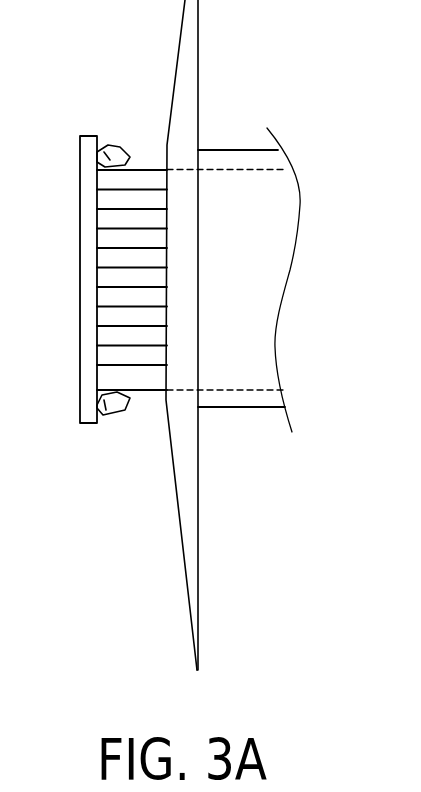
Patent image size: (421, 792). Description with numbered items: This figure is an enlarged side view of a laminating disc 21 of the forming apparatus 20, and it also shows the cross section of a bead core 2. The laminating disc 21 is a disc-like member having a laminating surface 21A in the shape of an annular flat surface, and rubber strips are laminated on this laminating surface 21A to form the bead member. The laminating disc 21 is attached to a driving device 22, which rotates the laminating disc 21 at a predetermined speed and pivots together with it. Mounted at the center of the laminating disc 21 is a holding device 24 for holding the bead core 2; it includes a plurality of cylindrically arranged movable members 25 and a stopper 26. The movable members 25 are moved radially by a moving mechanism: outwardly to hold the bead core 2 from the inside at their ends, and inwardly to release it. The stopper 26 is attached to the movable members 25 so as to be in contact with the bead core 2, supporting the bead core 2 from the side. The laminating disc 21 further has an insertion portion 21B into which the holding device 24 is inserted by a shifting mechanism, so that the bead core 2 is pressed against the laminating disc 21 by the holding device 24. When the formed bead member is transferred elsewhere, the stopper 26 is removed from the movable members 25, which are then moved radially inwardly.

The bead core 2 is at (122, 138).
The forming apparatus 20 is at (233, 264).
The laminating disc 21 is at (213, 335).
The laminating surface 21A is at (175, 60).
The insertion portion 21B is at (183, 336).
The driving device 22 is at (250, 405).
The holding device 24 is at (85, 280).
The movable members 25 is at (118, 280).
The stopper 26 is at (88, 199).